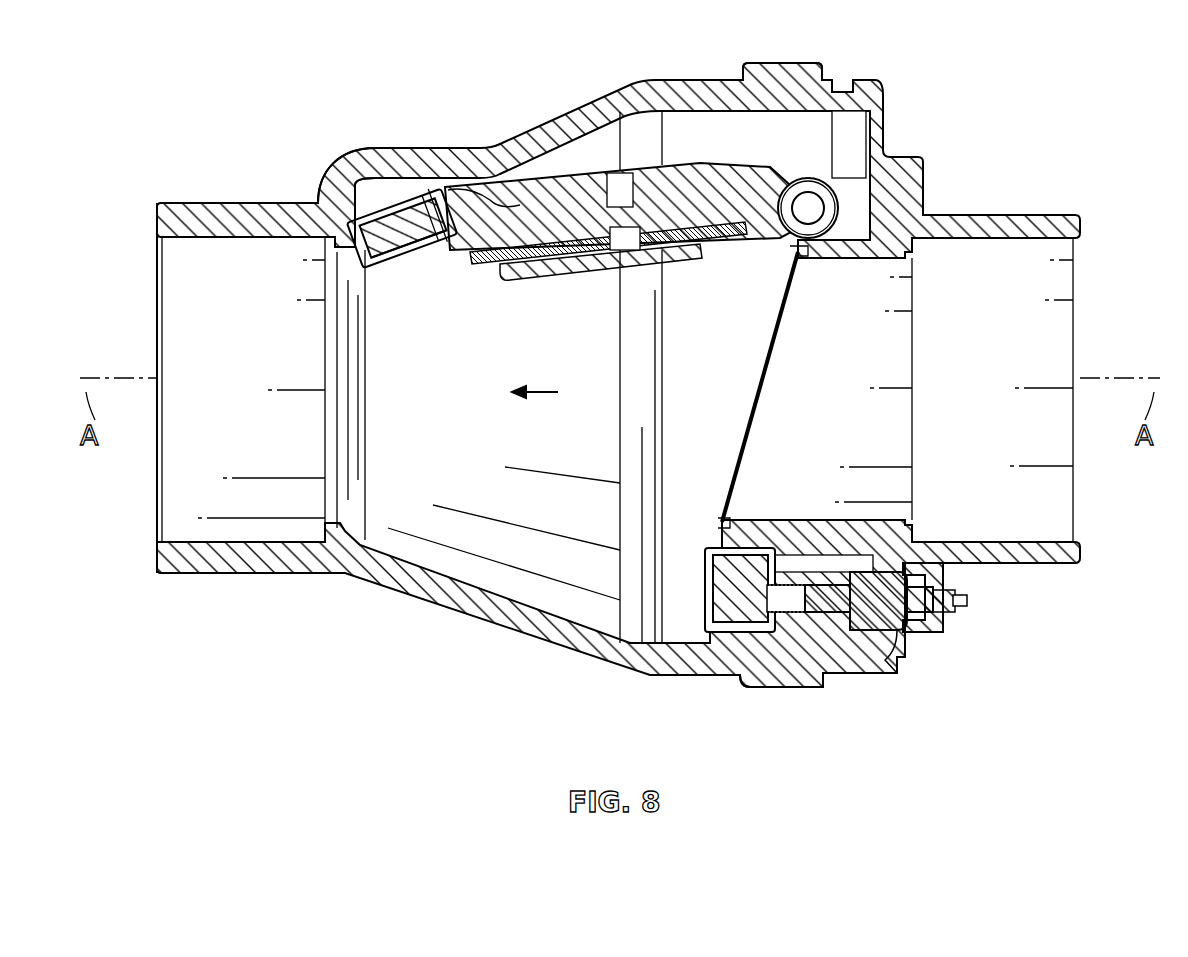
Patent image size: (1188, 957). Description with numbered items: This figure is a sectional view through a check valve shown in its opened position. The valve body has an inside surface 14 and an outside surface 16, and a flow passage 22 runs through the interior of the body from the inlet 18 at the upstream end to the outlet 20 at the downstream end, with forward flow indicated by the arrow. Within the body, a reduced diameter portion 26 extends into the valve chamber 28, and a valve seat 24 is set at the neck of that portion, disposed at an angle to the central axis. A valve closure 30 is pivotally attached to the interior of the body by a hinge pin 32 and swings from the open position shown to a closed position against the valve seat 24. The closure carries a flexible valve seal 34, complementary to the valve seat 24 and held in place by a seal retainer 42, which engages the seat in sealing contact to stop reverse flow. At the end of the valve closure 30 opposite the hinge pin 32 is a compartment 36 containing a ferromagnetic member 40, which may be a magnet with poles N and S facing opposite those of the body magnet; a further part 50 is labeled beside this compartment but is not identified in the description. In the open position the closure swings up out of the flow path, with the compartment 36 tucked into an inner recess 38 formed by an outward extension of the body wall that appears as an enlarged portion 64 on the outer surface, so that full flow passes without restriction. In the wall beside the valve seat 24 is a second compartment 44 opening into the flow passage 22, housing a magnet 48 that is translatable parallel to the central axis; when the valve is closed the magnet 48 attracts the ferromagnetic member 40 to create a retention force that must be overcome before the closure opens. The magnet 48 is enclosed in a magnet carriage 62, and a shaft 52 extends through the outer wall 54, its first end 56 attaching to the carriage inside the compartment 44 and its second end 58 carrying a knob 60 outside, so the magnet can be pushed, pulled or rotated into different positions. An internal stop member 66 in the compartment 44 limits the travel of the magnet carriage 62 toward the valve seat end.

The inside surface 14 is at (718, 112).
The outside surface 16 is at (705, 68).
The inlet 18 is at (1080, 265).
The outlet 20 is at (157, 213).
The flow passage 22 is at (525, 446).
The valve seat 24 is at (748, 420).
The reduced diameter portion 26 is at (837, 330).
The valve chamber 28 is at (733, 296).
The valve closure 30 is at (535, 218).
The hinge pin 32 is at (812, 208).
The flexible valve seal 34 is at (505, 266).
The compartment 36 is at (402, 228).
The inner recess 38 is at (378, 188).
The ferromagnetic member 40 is at (398, 266).
The seal retainer 42 is at (556, 264).
The compartment 44 is at (810, 560).
The magnet 48 is at (765, 634).
The retainer clip 50 is at (436, 256).
The shaft 52 is at (920, 615).
The outer wall 54 is at (898, 632).
The first end 56 is at (842, 600).
The second end 58 is at (950, 616).
The knob 60 is at (968, 598).
The magnet carriage 62 is at (818, 686).
The enlarged portion 64 is at (352, 155).
The internal stop member 66 is at (722, 652).